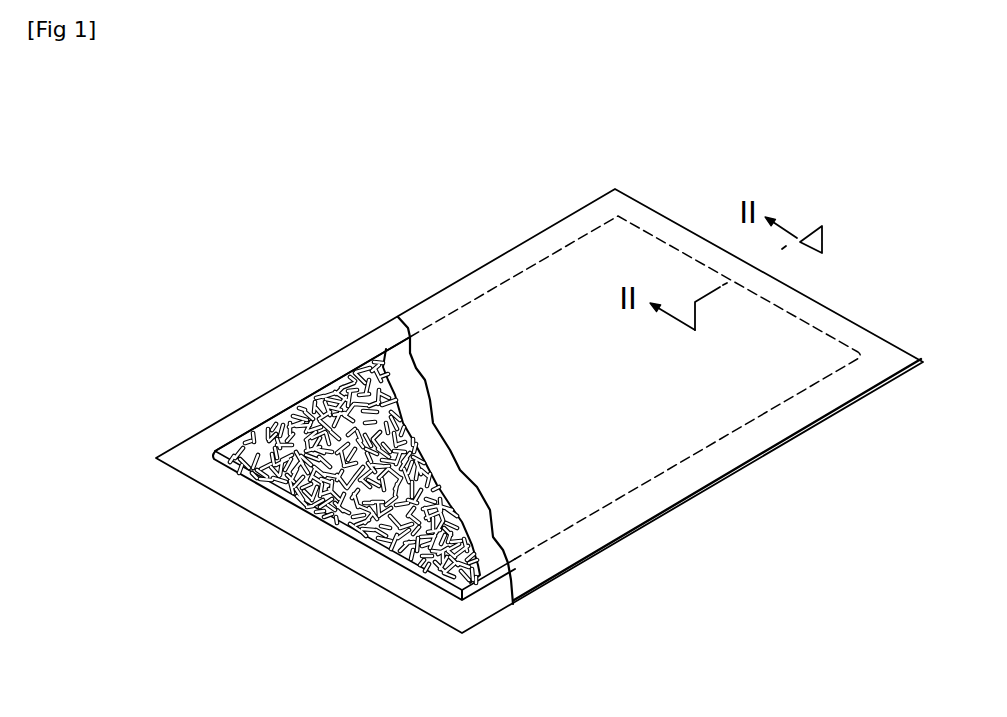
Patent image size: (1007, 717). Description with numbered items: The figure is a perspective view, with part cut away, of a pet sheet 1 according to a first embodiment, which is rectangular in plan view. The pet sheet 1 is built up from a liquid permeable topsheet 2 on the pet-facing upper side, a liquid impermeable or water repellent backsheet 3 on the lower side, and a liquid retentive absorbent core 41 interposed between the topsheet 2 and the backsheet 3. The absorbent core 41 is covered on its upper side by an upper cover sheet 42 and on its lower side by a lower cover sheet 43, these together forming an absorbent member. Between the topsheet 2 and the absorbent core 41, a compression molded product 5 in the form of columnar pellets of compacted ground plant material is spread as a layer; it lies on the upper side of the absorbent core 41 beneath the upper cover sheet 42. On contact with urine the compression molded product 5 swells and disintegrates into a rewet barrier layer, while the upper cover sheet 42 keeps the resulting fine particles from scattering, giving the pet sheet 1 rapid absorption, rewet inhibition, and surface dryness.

The pet sheet 1 is at (676, 178).
The topsheet 2 is at (473, 328).
The backsheet 3 is at (197, 447).
The compression molded product 5 is at (358, 388).
The absorbent core 41 is at (340, 527).
The upper cover sheet 42 is at (488, 543).
The lower cover sheet 43 is at (285, 415).